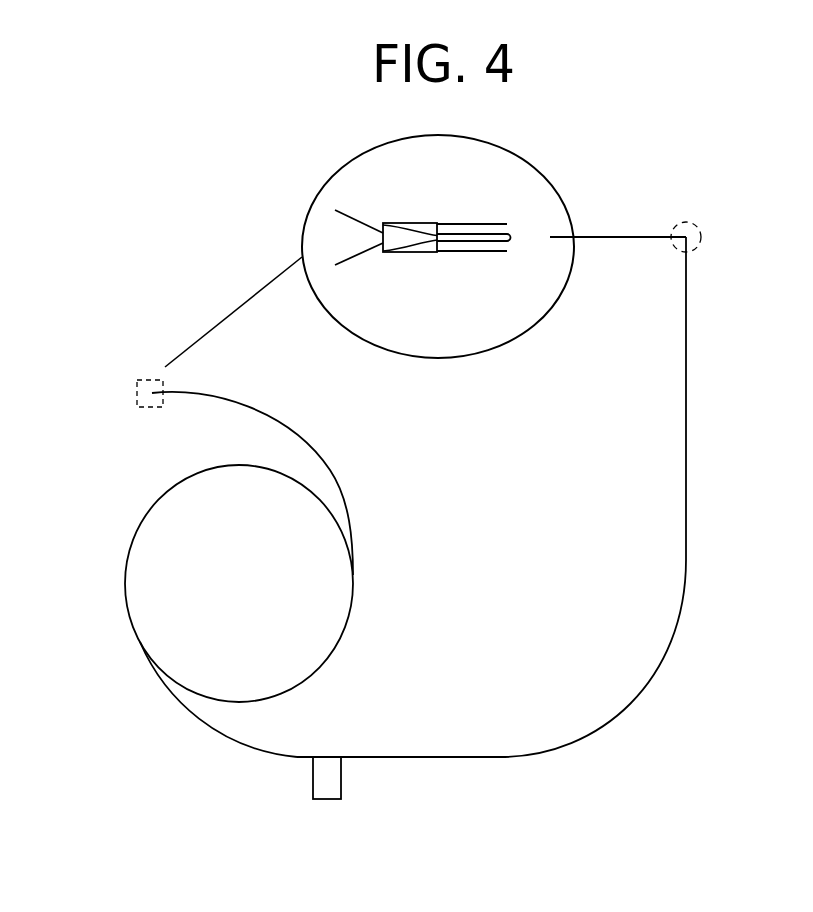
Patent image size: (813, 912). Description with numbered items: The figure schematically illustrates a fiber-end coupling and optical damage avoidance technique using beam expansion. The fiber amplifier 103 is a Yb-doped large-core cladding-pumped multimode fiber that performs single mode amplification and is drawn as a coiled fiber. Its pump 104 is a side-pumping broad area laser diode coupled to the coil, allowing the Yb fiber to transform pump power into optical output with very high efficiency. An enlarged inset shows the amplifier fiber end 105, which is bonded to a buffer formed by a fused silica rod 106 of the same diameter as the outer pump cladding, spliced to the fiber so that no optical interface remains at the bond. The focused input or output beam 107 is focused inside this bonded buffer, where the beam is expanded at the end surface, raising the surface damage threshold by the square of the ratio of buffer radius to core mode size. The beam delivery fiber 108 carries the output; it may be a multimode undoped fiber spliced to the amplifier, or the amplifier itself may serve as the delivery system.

The fiber amplifier 103 is at (265, 600).
The pump 104 is at (313, 775).
The amplifier fiber end 105 is at (477, 231).
The fused silica rod 106 is at (428, 253).
The focused input or output beam 107 is at (357, 256).
The beam delivery fiber 108 is at (686, 475).